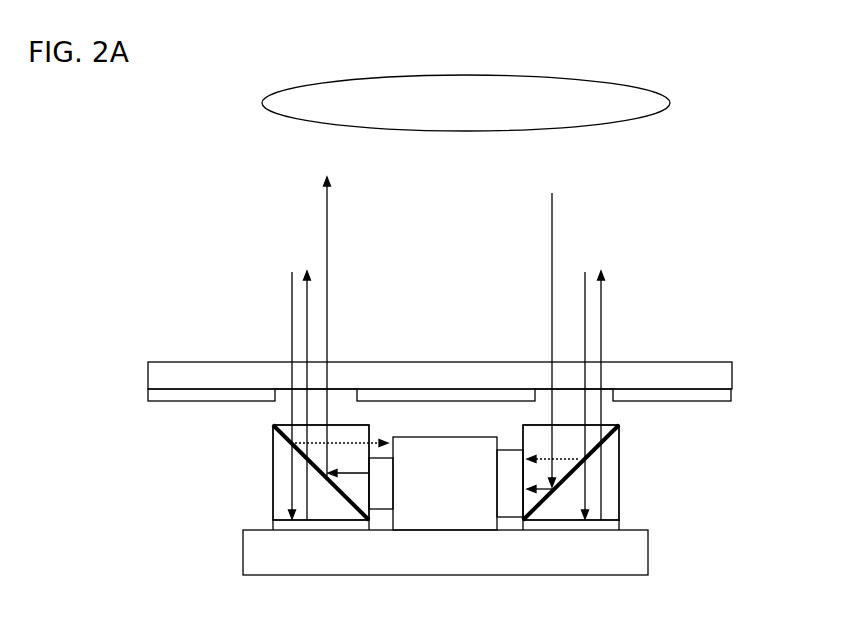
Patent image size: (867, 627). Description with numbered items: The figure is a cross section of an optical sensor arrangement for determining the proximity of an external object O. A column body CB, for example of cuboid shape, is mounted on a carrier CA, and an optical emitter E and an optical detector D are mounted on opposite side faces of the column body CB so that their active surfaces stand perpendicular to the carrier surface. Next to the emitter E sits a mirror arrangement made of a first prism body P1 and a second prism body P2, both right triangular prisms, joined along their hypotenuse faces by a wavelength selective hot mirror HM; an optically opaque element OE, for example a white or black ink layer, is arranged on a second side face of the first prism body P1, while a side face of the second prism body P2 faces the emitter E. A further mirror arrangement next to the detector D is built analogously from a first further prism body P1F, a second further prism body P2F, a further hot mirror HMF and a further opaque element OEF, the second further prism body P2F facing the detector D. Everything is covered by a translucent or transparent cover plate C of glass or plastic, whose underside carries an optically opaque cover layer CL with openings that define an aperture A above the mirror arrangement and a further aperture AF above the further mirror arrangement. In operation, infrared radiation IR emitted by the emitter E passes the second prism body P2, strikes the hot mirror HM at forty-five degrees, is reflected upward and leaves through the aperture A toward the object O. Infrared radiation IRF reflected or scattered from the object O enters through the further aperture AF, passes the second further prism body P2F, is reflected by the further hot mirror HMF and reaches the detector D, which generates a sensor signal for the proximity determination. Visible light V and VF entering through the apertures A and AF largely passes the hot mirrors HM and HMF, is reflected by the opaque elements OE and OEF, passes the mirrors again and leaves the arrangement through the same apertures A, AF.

The external object O is at (466, 103).
The cover plate C is at (440, 375).
The cover layer CL is at (734, 397).
The aperture A is at (343, 386).
The further aperture AF is at (609, 386).
The optically opaque element OE is at (275, 524).
The further optically opaque element OEF is at (619, 523).
The first prism body P1 is at (282, 463).
The first further prism body P1F is at (619, 458).
The second prism body P2 is at (370, 426).
The second further prism body P2F is at (523, 427).
The wavelength selective mirror HM is at (273, 426).
The further wavelength selective mirror HMF is at (619, 425).
The optical emitter E is at (381, 483).
The optical detector D is at (510, 483).
The column body CB is at (445, 483).
The carrier CA is at (445, 552).
The visible light V is at (299, 387).
The visible light VF is at (596, 387).
The emitted infrared radiation IR is at (341, 326).
The reflected or scattered infrared radiation IRF is at (552, 342).